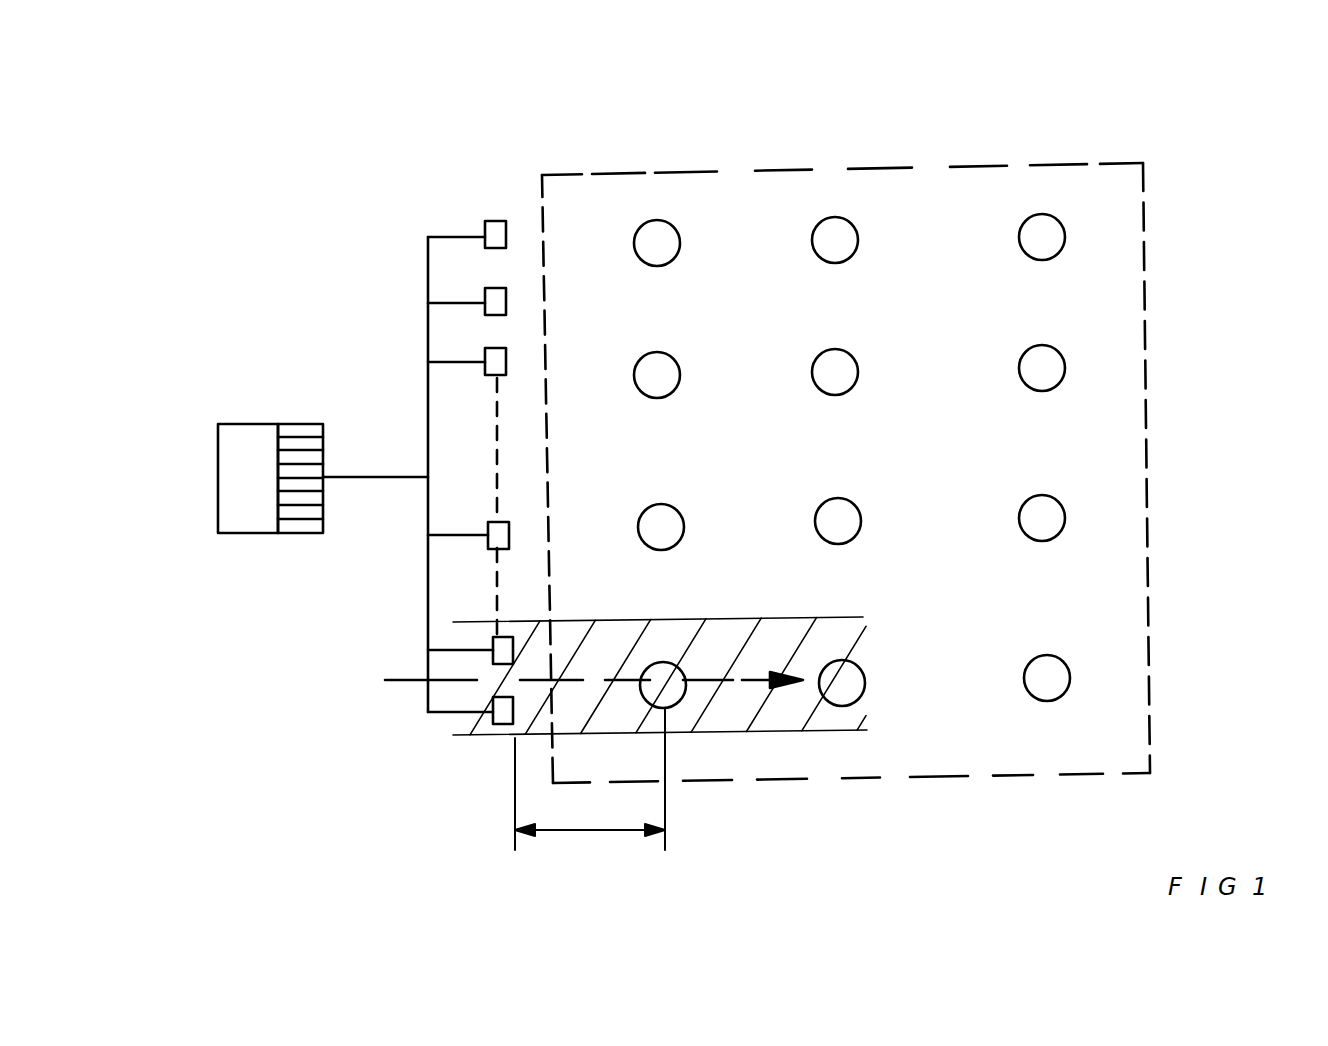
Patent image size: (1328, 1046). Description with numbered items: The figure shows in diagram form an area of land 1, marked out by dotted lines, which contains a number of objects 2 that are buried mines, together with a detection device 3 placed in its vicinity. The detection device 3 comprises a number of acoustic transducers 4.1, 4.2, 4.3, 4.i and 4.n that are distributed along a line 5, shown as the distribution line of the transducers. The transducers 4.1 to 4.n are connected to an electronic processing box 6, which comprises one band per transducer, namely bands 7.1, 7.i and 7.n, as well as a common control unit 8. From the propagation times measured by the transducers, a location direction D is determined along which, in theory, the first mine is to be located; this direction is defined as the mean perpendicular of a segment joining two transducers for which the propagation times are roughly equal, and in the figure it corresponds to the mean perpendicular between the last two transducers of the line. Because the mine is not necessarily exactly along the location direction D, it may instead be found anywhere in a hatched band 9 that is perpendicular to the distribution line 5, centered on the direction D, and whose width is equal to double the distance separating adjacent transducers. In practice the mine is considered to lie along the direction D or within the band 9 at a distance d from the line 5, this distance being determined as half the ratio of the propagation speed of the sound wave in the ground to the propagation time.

The area of land 1 is at (1097, 282).
The objects 2 is at (657, 245).
The detection device 3 is at (365, 248).
The acoustic transducer 4.1 is at (493, 232).
The acoustic transducer 4.2 is at (500, 298).
The third sensor 4.3 is at (495, 361).
The acoustic transducer 4.i is at (500, 530).
The acoustic transducer 4.n is at (493, 714).
The line 5 is at (478, 440).
The electronic processing box 6 is at (278, 469).
The band 7.1 is at (297, 432).
The band 7.i is at (300, 495).
The band 7.n is at (302, 525).
The common control unit 8 is at (235, 457).
The band 9 is at (815, 640).
The distance between sensor row and hole d is at (590, 779).
The location direction D is at (760, 672).